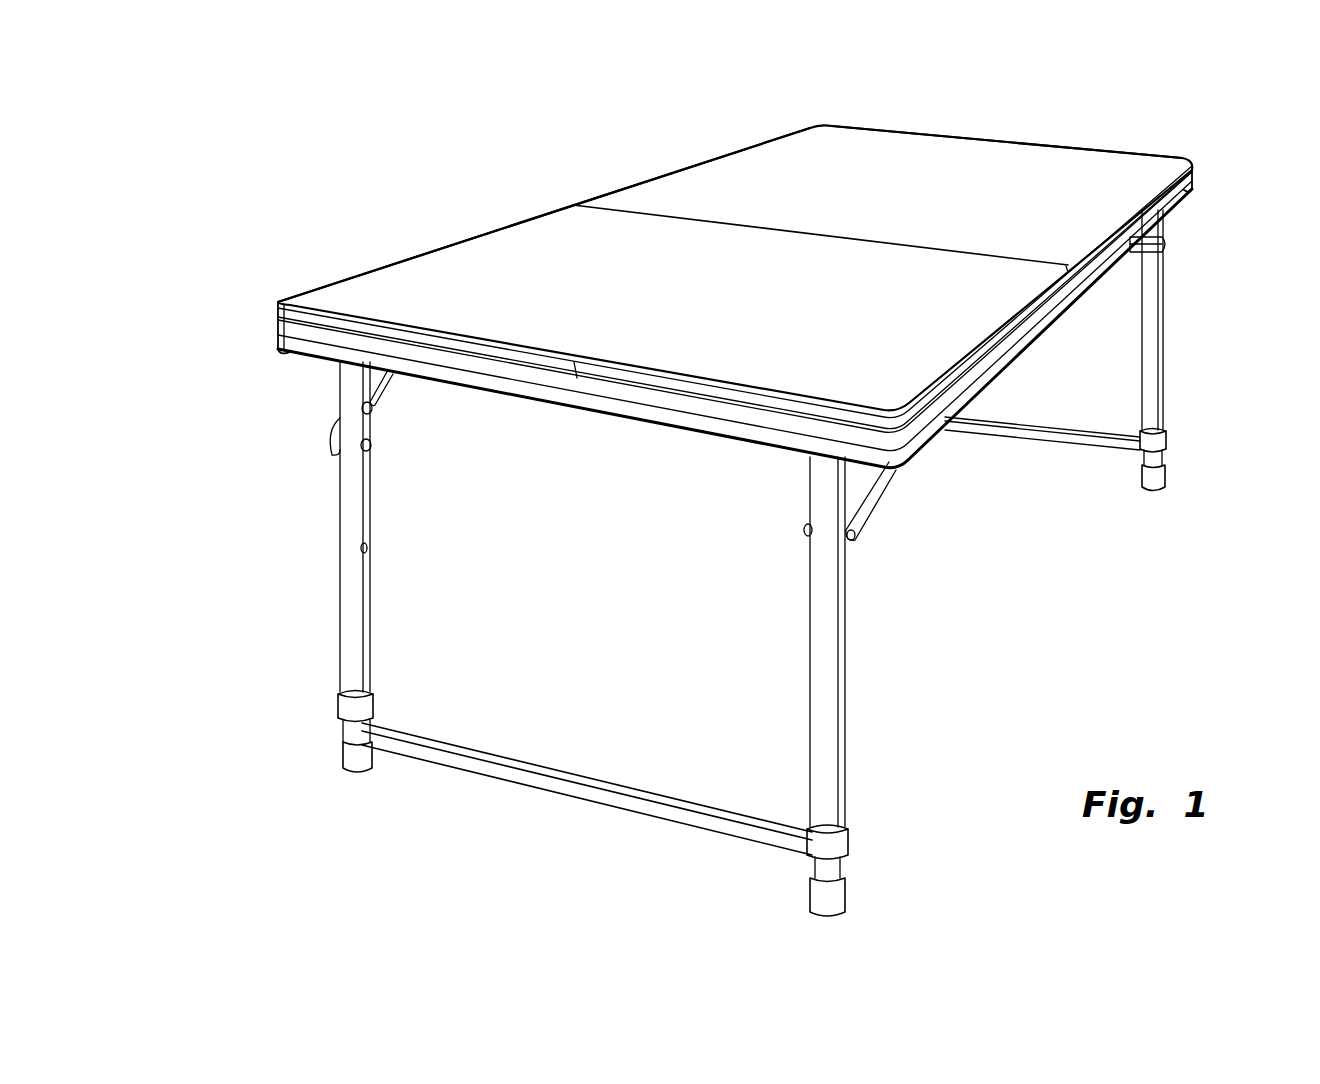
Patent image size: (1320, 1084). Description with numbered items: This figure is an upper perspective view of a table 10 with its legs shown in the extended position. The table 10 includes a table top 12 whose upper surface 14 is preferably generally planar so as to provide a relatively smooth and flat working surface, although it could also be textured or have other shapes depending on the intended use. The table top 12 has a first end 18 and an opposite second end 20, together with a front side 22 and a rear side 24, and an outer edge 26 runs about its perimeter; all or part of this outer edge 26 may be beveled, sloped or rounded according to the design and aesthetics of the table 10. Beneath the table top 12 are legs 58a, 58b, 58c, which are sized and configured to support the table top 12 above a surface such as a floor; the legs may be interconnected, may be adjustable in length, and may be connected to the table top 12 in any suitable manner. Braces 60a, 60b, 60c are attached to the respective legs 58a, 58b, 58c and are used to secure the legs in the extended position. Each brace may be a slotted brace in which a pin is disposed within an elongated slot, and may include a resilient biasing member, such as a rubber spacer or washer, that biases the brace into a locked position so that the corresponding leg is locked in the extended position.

The table 10 is at (265, 176).
The table top 12 is at (1110, 156).
The upper surface 14 is at (692, 166).
The first end 18 is at (578, 362).
The second end 20 is at (956, 134).
The front side 22 is at (1056, 306).
The rear side 24 is at (516, 216).
The outer edge 26 is at (1002, 355).
The leg 58a is at (362, 591).
The leg 58b is at (836, 709).
The leg 58c is at (1156, 348).
The brace 60a is at (381, 398).
The brace 60b is at (882, 511).
The brace 60c is at (1136, 254).